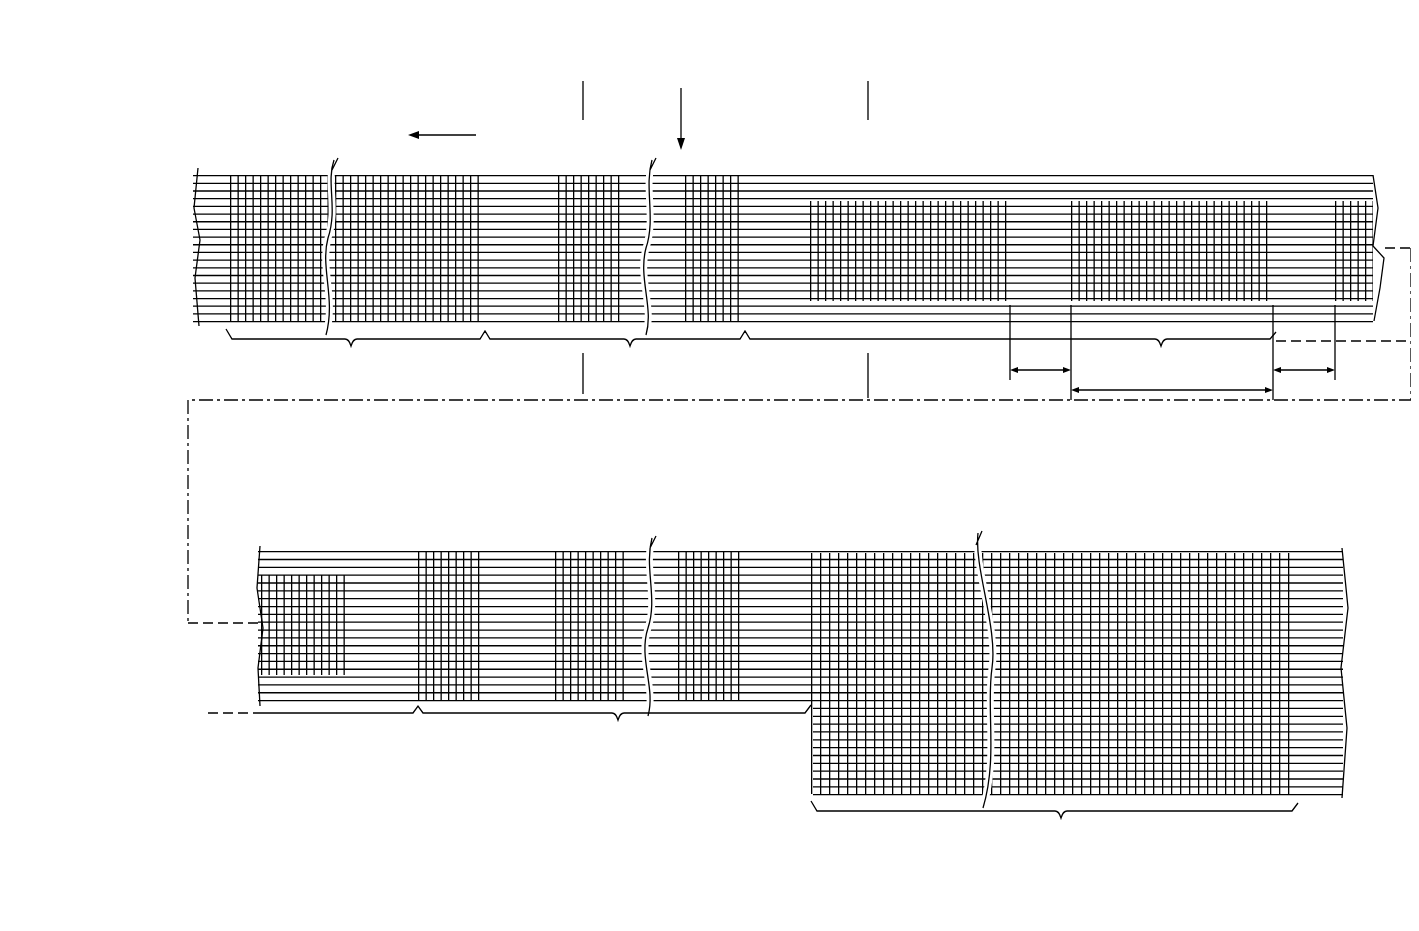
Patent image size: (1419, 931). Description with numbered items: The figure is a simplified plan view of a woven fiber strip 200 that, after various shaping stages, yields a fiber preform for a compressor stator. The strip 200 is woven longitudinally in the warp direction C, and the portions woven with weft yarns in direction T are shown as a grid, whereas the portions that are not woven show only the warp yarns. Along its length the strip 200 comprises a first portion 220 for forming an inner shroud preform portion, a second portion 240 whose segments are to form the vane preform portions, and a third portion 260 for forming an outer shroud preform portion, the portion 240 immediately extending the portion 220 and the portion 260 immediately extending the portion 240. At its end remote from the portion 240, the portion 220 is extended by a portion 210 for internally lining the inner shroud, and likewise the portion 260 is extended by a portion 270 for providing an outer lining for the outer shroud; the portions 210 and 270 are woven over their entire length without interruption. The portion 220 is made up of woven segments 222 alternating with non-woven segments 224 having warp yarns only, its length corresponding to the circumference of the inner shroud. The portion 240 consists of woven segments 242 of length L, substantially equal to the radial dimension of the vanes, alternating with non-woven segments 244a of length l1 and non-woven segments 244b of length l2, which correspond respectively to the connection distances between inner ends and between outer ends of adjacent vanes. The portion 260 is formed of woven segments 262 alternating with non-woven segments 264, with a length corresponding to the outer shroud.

The woven fiber strip 200 is at (789, 461).
The inner lining portion 210 is at (357, 273).
The first portion 220 is at (672, 239).
The woven segment 222 is at (586, 168).
The non-woven segment 224 is at (663, 168).
The second portion 240 is at (1172, 274).
The woven segment 242 is at (946, 205).
The non-woven segment 244a is at (1305, 207).
The non-woven segment 244b is at (1036, 207).
The third portion 260 is at (534, 626).
The woven segment 262 is at (588, 550).
The non-woven segment 264 is at (518, 558).
The outer lining portion 270 is at (1079, 688).
The warp direction C is at (442, 123).
The weft direction T is at (691, 119).
The length of woven segments 242 L is at (1172, 384).
The length of segments 244a l1 is at (1304, 352).
The length of segments 244b l2 is at (1040, 352).